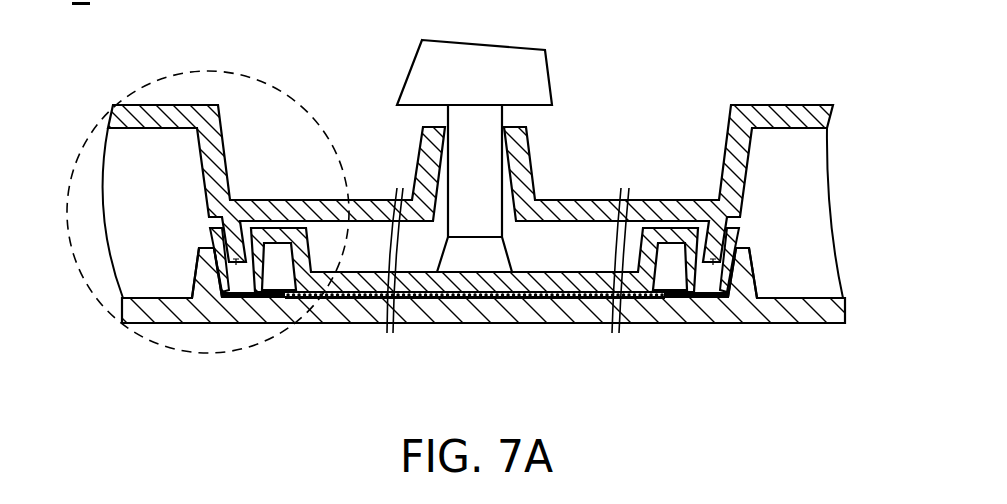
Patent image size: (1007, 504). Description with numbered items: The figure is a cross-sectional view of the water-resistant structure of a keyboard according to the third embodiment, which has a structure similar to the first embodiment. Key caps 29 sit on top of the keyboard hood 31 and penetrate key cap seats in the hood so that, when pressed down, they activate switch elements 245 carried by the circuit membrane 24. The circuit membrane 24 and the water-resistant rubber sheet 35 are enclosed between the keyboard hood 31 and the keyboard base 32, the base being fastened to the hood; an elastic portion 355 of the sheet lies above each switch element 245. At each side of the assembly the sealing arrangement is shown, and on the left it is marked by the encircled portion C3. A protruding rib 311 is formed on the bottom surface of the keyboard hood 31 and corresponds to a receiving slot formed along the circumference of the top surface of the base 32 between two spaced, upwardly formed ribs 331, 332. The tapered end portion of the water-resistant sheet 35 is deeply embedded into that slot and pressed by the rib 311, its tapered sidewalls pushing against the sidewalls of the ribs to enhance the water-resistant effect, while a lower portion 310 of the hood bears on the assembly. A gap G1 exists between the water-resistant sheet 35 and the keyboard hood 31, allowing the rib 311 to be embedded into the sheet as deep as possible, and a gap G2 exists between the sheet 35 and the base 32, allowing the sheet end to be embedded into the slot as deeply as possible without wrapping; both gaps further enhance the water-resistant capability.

The key cap 29 is at (484, 42).
The keyboard hood 31 is at (111, 114).
The housing plate 310 is at (325, 226).
The protruding rib 311 is at (241, 229).
The water-resistant sheet 35 is at (209, 231).
The keyboard base 32 is at (120, 304).
The left raised portion 331 is at (203, 290).
The right raised portion 332 is at (277, 290).
The gap G1 is at (218, 297).
The gap G2 is at (240, 296).
The circuit membrane 24 is at (416, 302).
The switch element 245 is at (486, 298).
The pedestal foot 355 is at (510, 253).
The encircled portion C3 is at (207, 72).